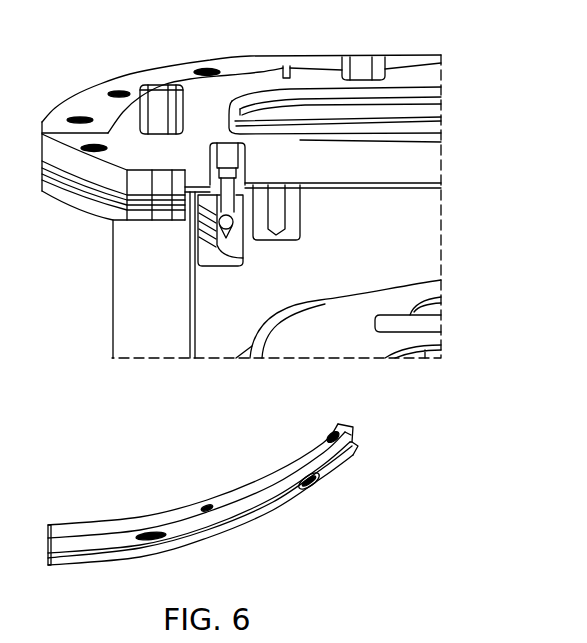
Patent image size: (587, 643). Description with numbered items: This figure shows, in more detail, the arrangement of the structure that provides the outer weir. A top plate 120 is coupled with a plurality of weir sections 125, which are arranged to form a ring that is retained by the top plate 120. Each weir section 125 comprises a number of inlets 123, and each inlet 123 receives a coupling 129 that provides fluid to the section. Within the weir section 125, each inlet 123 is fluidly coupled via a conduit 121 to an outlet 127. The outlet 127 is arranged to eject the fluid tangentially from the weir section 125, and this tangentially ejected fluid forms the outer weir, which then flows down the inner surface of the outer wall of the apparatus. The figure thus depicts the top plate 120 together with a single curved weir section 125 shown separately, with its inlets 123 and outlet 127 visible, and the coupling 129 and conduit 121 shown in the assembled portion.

The top plate 120 is at (138, 140).
The coupling 129 is at (224, 145).
The conduit 121 is at (232, 224).
The inlet 123 is at (330, 436).
The weir section 125 is at (98, 530).
The outlet 127 is at (315, 490).